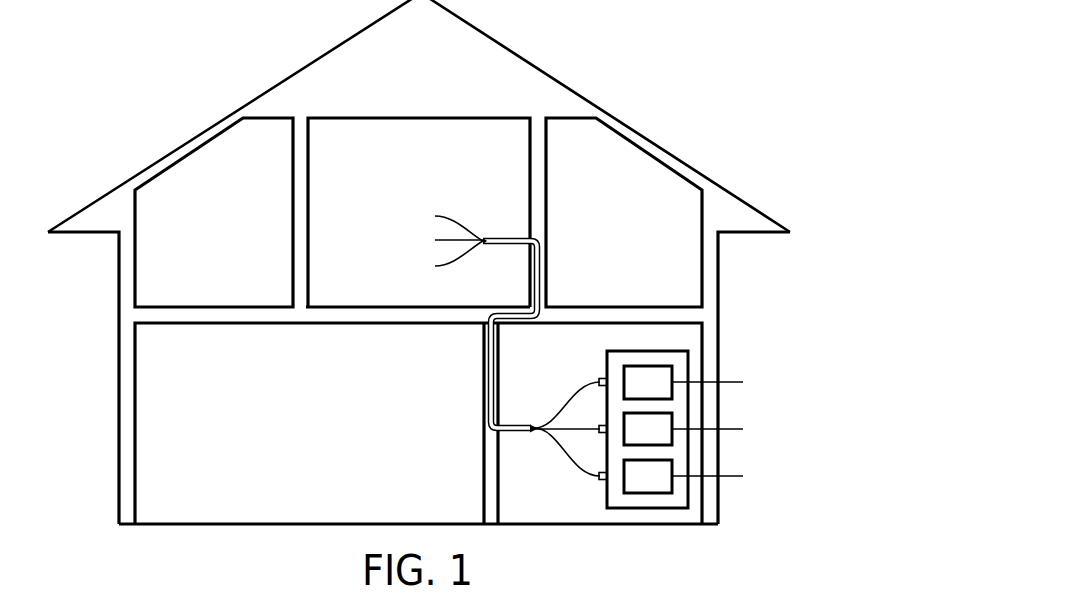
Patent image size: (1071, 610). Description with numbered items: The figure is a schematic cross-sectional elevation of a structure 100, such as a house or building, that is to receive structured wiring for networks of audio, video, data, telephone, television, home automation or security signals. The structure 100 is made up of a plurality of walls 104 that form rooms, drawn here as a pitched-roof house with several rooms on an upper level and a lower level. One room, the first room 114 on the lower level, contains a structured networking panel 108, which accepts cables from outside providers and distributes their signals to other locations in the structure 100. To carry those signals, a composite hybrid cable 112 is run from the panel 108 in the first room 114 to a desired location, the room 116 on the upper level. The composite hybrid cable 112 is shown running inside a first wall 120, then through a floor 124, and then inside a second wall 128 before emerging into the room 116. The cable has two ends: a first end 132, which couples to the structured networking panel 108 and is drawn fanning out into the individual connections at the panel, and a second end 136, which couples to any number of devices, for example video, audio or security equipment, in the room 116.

The structure 100 is at (197, 133).
The walls 104 is at (559, 185).
The structured networking panel 108 is at (647, 510).
The composite hybrid cable 112 is at (517, 424).
The first room 114 is at (587, 517).
The room 116 is at (418, 128).
The first wall 120 is at (481, 448).
The floor 124 is at (368, 305).
The second wall 128 is at (548, 228).
The first end 132 is at (569, 462).
The second end 136 is at (458, 222).